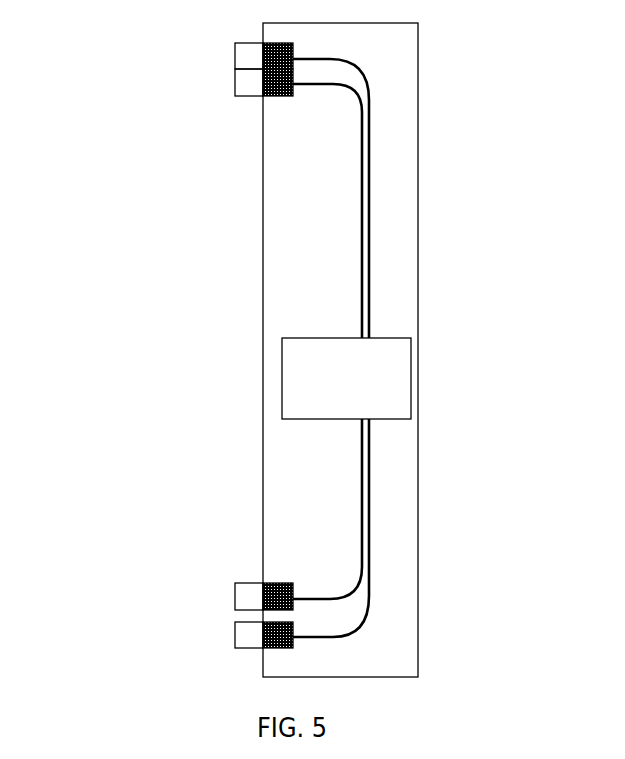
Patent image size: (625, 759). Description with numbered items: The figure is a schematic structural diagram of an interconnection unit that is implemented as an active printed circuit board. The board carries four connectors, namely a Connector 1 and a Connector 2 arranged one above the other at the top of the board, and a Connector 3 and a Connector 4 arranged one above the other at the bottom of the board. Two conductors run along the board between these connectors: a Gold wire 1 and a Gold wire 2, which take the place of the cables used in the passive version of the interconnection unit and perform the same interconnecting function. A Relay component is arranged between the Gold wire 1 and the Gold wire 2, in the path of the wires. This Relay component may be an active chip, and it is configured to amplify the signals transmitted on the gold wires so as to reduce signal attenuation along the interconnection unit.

The connector Connector 1 is at (207, 48).
The connector Connector 2 is at (209, 92).
The connector Connector 3 is at (210, 594).
The connector Connector 4 is at (210, 632).
The gold wire Gold wire 1 is at (388, 227).
The gold wire Gold wire 2 is at (333, 295).
The relay component Relay component is at (346, 378).